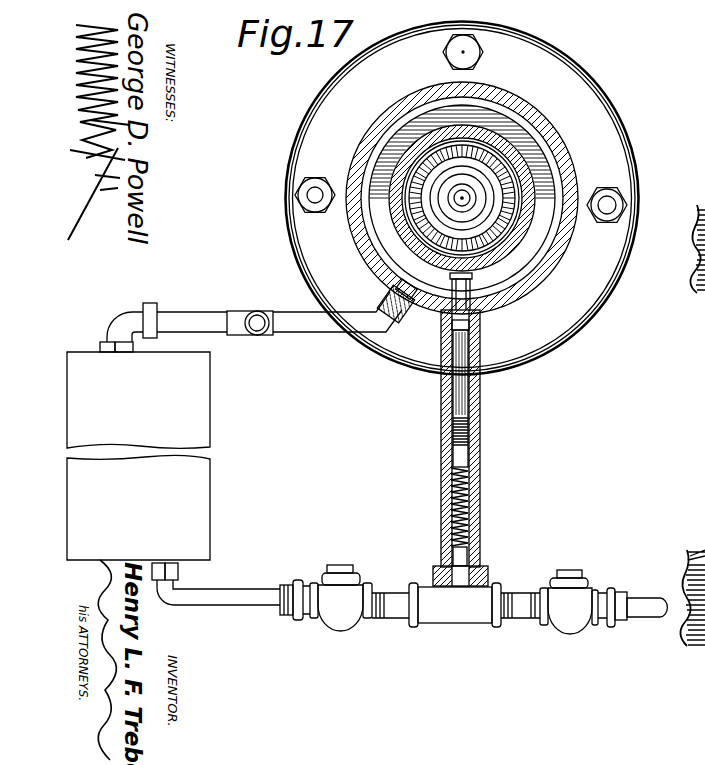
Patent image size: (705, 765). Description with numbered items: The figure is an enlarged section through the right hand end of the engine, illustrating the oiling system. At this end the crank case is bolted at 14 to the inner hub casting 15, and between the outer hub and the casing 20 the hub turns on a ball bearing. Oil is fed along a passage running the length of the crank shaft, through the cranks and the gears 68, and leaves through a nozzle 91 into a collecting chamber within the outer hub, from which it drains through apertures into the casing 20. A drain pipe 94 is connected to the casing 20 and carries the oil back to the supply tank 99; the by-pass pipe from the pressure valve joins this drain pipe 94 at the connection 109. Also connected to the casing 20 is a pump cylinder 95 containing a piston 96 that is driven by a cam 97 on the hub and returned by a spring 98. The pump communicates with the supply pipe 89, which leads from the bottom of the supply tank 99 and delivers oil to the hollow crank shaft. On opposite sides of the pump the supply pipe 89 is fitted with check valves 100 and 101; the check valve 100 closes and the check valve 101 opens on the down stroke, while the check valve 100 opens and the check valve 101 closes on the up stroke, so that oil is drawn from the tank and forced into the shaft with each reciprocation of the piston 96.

The bolting 14 is at (619, 202).
The inner hub casting 15 is at (296, 133).
The casing 20 is at (568, 254).
The gears 68 is at (503, 160).
The nozzle 91 is at (447, 203).
The drain pipe 94 is at (330, 327).
The pump cylinder 95 is at (479, 404).
The piston 96 is at (458, 437).
The cam 97 is at (506, 127).
The spring 98 is at (463, 513).
The supply tank 99 is at (138, 456).
The check valve 100 is at (337, 617).
The check valve 101 is at (563, 622).
The connection 109 is at (270, 333).
The supply pipe 89 is at (218, 588).